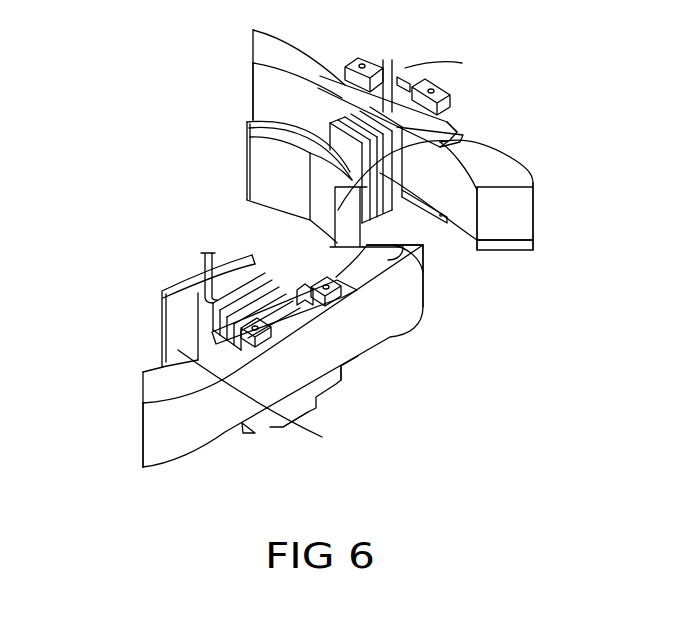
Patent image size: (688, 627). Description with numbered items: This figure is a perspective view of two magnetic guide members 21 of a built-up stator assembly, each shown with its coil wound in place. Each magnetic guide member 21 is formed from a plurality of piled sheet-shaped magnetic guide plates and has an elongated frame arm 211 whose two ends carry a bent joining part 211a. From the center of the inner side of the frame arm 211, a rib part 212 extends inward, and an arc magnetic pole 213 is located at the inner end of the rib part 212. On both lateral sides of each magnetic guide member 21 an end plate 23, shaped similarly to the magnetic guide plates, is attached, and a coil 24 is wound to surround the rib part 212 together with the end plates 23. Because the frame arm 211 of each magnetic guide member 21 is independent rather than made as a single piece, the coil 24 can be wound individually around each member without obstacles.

The magnetic guide member 21 is at (543, 178).
The frame arm 211 is at (278, 47).
The bent joining part 211a is at (252, 72).
The rib part 212 is at (535, 241).
The arc magnetic pole 213 is at (470, 136).
The end plate 23 is at (408, 80).
The coil 24 is at (330, 120).